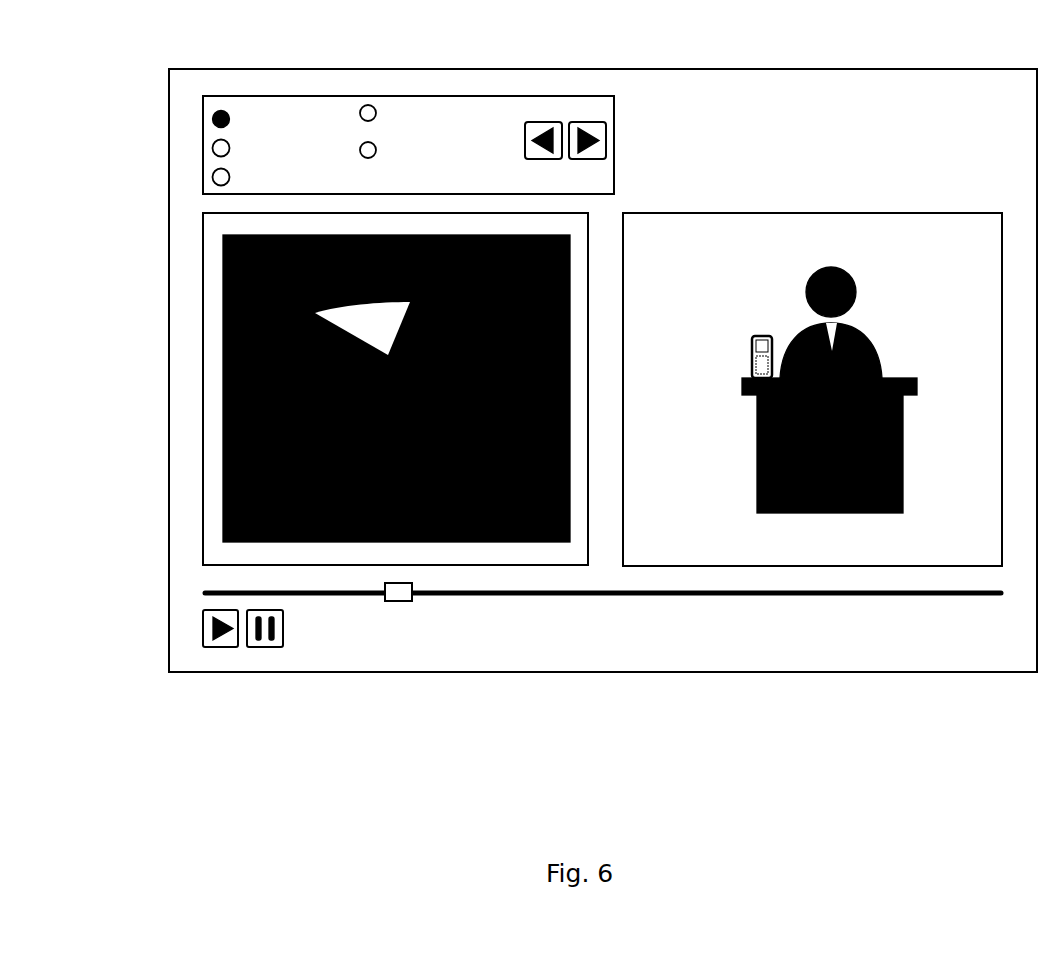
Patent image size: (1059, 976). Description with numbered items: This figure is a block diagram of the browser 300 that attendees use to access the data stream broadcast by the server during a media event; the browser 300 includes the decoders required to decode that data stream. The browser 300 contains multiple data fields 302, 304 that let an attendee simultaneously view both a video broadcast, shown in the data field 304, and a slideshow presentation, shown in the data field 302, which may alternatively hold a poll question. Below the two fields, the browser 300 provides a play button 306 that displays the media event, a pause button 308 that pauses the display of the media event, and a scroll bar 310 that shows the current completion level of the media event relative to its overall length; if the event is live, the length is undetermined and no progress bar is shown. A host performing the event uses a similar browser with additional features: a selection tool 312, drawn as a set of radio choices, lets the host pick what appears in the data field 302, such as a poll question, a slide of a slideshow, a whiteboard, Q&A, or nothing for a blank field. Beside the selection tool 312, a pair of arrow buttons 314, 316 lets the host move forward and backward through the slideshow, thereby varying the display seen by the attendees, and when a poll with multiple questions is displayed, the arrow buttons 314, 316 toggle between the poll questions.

The browser 300 is at (68, 78).
The data field 302 is at (557, 222).
The data field 304 is at (815, 222).
The play button 306 is at (219, 648).
The pause button 308 is at (265, 648).
The scroll bar 310 is at (398, 602).
The selection tool 312 is at (229, 103).
The arrow button 314 is at (587, 121).
The arrow button 316 is at (543, 121).